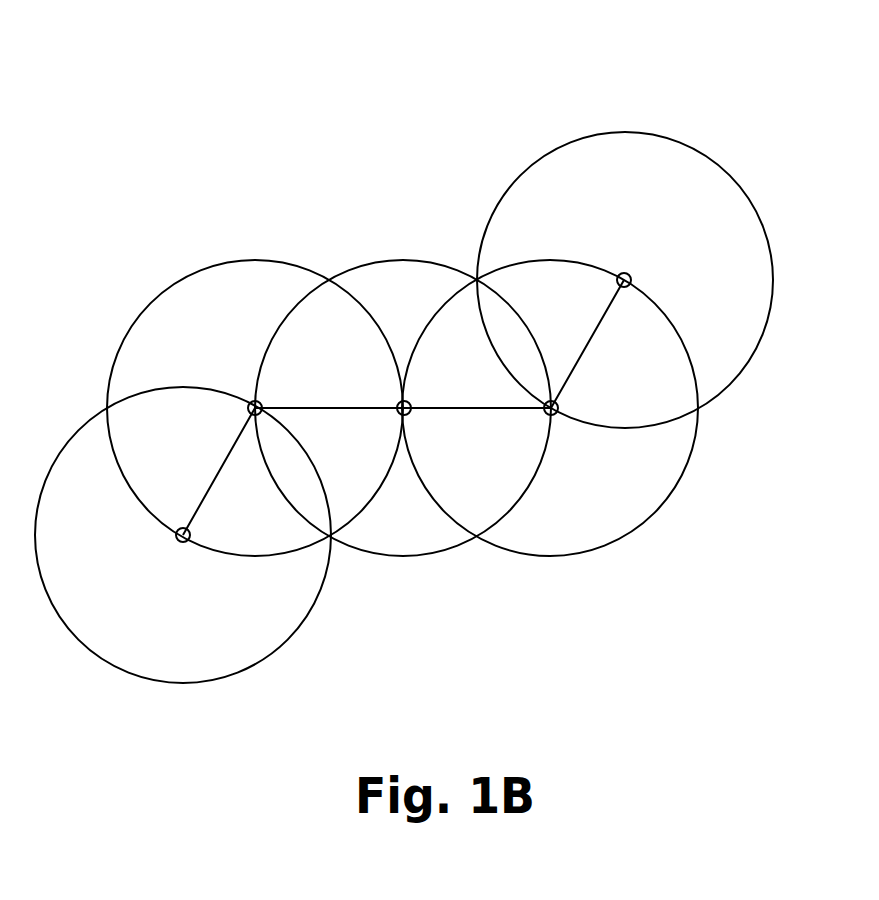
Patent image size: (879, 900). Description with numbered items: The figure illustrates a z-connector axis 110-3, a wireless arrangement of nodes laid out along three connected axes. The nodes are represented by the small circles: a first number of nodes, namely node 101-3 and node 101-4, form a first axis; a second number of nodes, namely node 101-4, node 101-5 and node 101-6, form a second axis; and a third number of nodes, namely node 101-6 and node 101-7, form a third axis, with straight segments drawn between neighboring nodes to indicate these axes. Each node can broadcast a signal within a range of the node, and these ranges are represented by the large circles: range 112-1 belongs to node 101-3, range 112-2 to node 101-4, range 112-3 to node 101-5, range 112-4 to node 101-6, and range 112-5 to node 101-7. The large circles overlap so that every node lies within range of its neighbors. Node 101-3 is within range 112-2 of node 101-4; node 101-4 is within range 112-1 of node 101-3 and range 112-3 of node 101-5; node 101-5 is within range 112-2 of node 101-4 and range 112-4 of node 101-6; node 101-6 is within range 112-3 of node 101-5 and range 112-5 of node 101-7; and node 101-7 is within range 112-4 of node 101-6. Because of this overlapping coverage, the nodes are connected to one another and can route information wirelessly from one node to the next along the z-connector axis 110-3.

The z-connector axis 110-3 is at (412, 188).
The range 112-1 is at (182, 684).
The range 112-2 is at (163, 293).
The range 112-3 is at (370, 554).
The range 112-4 is at (590, 554).
The range 112-5 is at (618, 131).
The node 101-3 is at (176, 535).
The node 101-4 is at (249, 404).
The node 101-5 is at (411, 410).
The node 101-6 is at (555, 414).
The node 101-7 is at (627, 273).